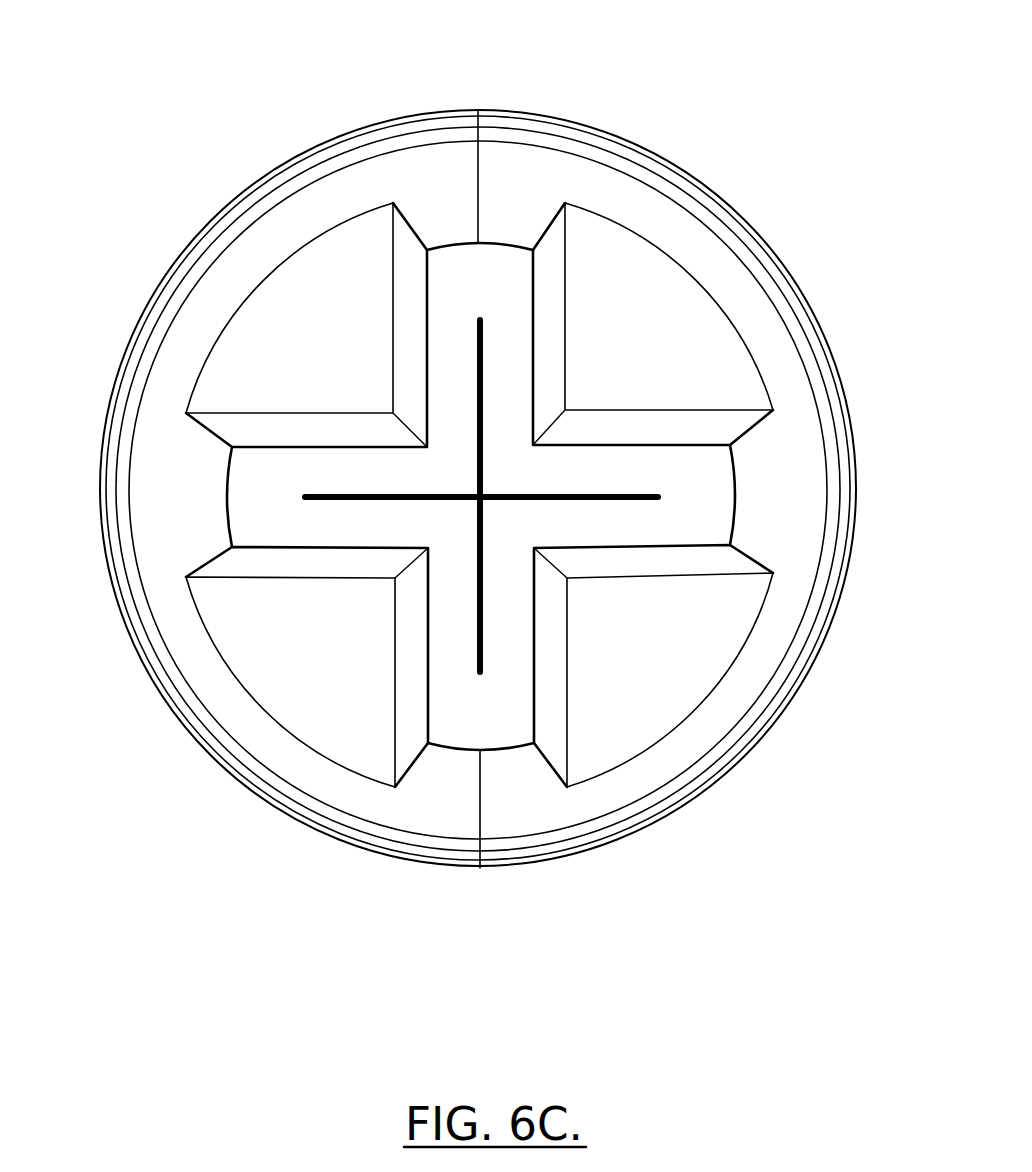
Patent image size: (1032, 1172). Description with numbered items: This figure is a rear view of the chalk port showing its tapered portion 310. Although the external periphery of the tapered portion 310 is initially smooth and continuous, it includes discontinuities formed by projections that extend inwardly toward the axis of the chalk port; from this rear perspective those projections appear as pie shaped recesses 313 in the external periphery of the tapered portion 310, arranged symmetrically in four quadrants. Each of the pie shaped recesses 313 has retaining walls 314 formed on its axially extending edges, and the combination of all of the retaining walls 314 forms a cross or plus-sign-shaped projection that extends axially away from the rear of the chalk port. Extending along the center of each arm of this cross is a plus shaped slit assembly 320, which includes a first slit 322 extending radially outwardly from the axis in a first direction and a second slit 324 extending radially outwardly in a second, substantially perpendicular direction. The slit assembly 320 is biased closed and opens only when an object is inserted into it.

The tapered portion 310 is at (478, 444).
The pie shaped recesses 313 is at (483, 418).
The retaining walls 314 is at (893, 412).
The slit assembly 320 is at (473, 573).
The first slit 322 is at (275, 438).
The second slit 324 is at (305, 497).